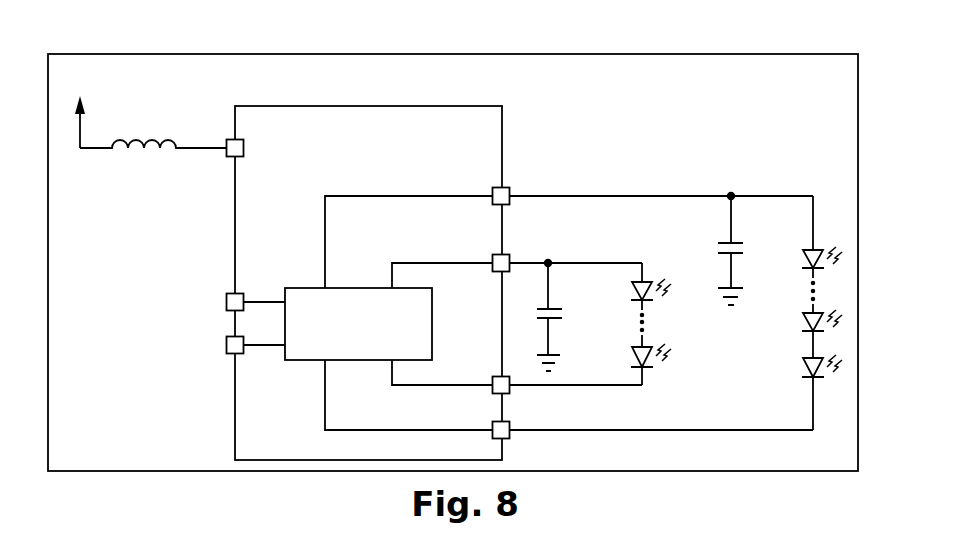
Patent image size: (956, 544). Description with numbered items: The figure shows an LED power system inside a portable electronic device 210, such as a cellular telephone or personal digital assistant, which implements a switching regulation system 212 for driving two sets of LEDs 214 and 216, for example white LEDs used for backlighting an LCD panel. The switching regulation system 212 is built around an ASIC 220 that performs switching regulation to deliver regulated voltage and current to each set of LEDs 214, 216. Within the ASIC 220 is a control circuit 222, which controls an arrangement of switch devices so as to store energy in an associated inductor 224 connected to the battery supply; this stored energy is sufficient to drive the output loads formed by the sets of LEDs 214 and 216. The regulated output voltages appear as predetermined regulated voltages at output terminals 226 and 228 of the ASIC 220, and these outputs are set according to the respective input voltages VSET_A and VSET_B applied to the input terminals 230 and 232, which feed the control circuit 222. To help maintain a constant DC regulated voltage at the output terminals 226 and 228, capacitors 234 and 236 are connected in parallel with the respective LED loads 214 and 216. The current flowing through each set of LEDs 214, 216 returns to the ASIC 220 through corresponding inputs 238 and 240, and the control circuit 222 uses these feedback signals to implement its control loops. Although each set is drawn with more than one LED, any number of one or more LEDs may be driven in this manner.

The portable electronic device 210 is at (97, 471).
The switching regulation system 212 is at (568, 117).
The set of LEDs 214 is at (795, 369).
The set of LEDs 216 is at (672, 326).
The ASIC 220 is at (316, 106).
The control circuit 222 is at (432, 308).
The inductor 224 is at (147, 143).
The output terminal 226 is at (509, 192).
The output terminal 228 is at (509, 258).
The input terminal 230 is at (228, 295).
The input terminal 232 is at (230, 354).
The capacitor 234 is at (740, 245).
The capacitor 236 is at (556, 320).
The input 238 is at (509, 438).
The input 240 is at (509, 392).